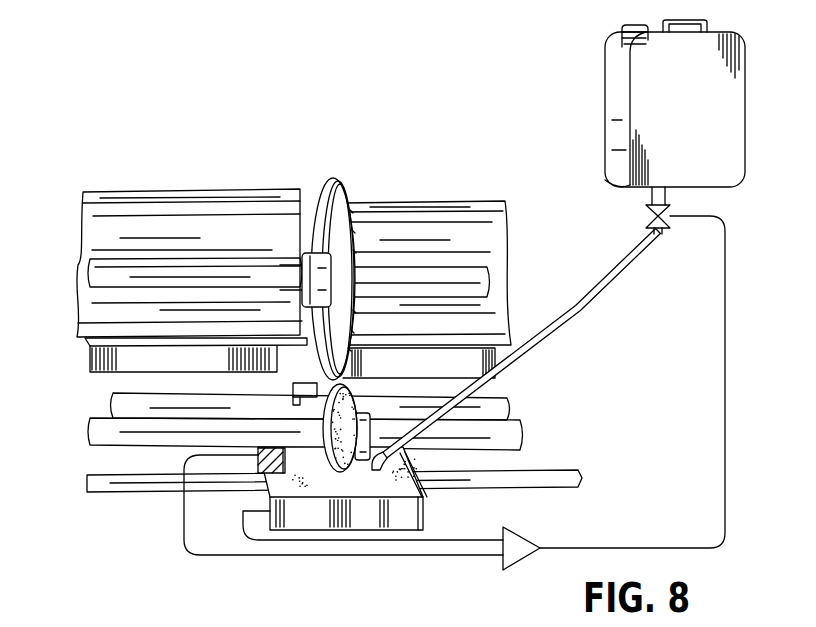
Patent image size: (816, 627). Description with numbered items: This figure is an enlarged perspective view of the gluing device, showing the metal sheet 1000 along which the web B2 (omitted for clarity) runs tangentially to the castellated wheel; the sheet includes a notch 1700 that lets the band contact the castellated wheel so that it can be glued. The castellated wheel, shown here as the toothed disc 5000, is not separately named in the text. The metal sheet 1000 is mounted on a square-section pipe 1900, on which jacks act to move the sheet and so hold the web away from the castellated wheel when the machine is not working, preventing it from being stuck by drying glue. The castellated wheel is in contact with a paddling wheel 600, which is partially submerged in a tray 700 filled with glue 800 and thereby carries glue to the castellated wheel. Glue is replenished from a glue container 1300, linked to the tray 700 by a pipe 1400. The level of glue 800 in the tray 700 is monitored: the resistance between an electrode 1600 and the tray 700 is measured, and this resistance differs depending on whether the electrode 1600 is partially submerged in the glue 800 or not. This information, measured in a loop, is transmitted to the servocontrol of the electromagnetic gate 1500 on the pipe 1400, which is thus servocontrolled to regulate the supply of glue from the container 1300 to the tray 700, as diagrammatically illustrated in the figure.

The metal sheet 1000 is at (172, 247).
The square-section pipe 1900 is at (88, 356).
The cutting disc 5000 is at (338, 160).
The notch 1700 is at (303, 234).
The paddling wheel 600 is at (322, 412).
The tray 700 is at (322, 530).
The glue 800 is at (385, 488).
The electrode 1600 is at (280, 463).
The pipe 1400 is at (599, 299).
The glue container 1300 is at (694, 119).
The electromagnetic gate 1500 is at (647, 211).